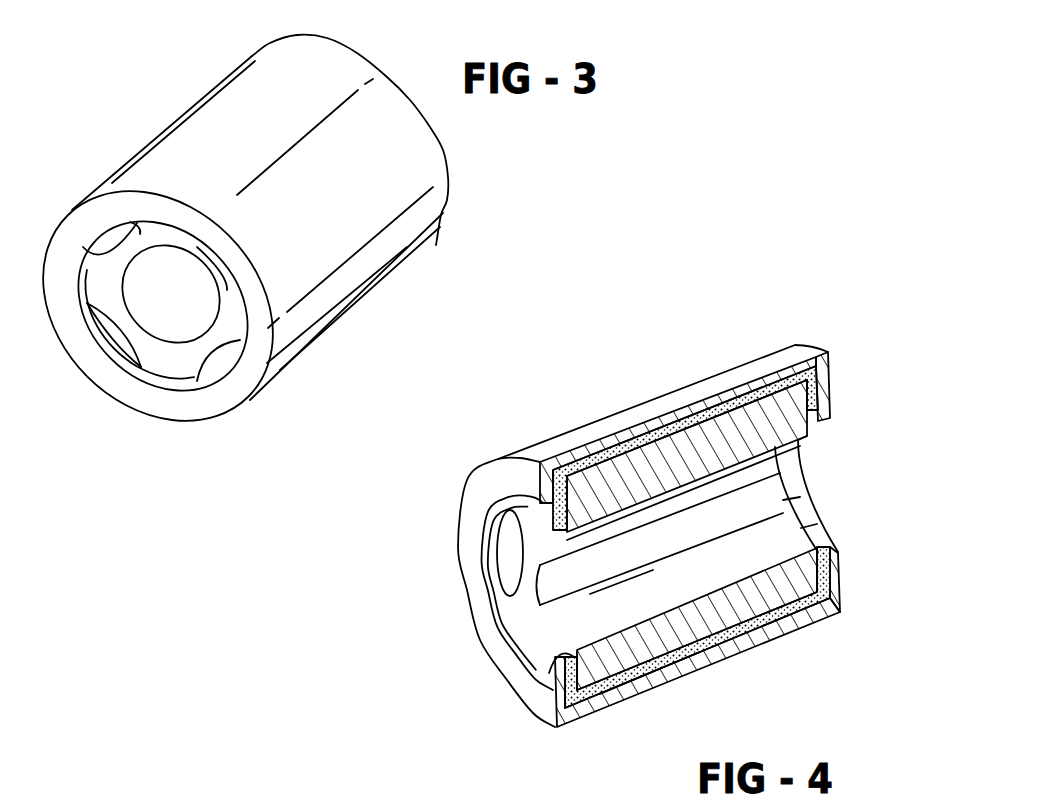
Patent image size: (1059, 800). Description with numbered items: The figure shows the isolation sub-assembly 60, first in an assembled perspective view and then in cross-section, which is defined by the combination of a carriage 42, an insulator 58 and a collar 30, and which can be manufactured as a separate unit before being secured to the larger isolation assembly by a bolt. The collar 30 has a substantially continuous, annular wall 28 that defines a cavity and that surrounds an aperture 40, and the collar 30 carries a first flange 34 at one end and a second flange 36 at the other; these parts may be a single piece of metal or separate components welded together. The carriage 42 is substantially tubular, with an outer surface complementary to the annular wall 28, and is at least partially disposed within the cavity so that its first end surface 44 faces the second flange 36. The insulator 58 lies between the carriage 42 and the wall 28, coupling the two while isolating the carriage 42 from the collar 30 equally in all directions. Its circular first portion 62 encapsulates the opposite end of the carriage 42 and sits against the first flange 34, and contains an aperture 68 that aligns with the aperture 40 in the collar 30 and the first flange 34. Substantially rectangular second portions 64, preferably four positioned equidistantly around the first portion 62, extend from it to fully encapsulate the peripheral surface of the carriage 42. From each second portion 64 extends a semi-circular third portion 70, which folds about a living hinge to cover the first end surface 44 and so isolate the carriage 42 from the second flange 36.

In FIG. 3, the wall 28 is at (154, 140).
In FIG. 4, the wall 28 is at (682, 674).
In FIG. 3, the collar 30 is at (390, 289).
In FIG. 4, the collar 30 is at (677, 386).
In FIG. 4, the first flange 34 is at (832, 390).
In FIG. 3, the second flange 36 is at (165, 400).
In FIG. 4, the second flange 36 is at (492, 493).
In FIG. 4, the aperture 40 is at (800, 492).
In FIG. 3, the carriage 42 is at (151, 296).
In FIG. 4, the carriage 42 is at (721, 614).
In FIG. 3, the first end surface 44 is at (163, 370).
In FIG. 4, the first end surface 44 is at (530, 622).
In FIG. 4, the insulator 58 is at (643, 688).
In FIG. 3, the isolation sub-assembly 60 is at (197, 91).
In FIG. 4, the isolation sub-assembly 60 is at (762, 338).
In FIG. 4, the first portion 62 is at (838, 565).
In FIG. 4, the second portions 64 is at (627, 447).
In FIG. 4, the aperture 68 is at (803, 521).
In FIG. 3, the third portions 70 is at (107, 237).
In FIG. 4, the third portions 70 is at (503, 560).